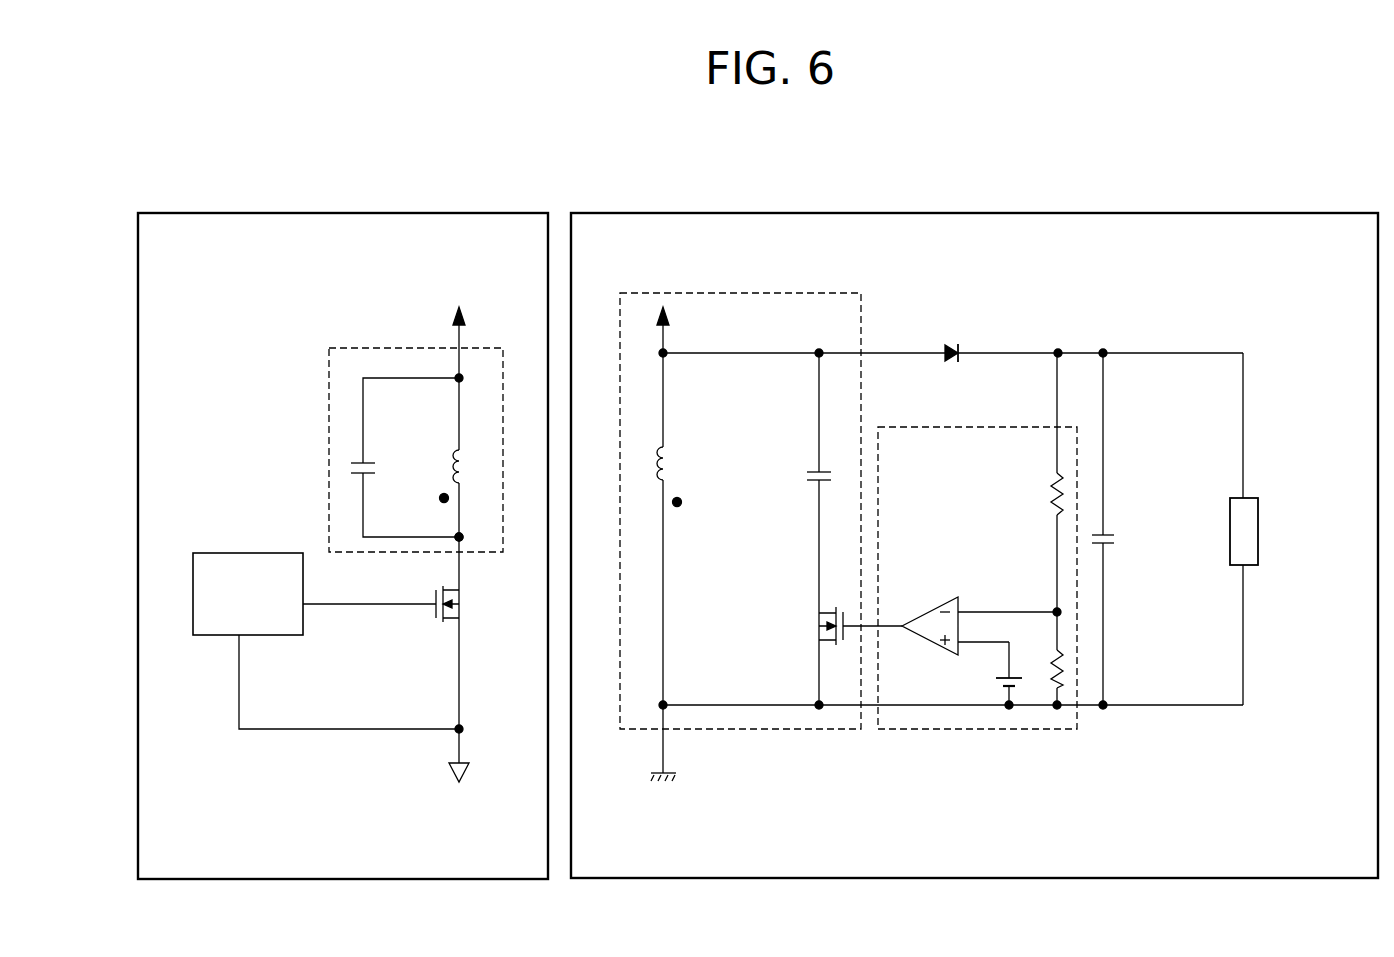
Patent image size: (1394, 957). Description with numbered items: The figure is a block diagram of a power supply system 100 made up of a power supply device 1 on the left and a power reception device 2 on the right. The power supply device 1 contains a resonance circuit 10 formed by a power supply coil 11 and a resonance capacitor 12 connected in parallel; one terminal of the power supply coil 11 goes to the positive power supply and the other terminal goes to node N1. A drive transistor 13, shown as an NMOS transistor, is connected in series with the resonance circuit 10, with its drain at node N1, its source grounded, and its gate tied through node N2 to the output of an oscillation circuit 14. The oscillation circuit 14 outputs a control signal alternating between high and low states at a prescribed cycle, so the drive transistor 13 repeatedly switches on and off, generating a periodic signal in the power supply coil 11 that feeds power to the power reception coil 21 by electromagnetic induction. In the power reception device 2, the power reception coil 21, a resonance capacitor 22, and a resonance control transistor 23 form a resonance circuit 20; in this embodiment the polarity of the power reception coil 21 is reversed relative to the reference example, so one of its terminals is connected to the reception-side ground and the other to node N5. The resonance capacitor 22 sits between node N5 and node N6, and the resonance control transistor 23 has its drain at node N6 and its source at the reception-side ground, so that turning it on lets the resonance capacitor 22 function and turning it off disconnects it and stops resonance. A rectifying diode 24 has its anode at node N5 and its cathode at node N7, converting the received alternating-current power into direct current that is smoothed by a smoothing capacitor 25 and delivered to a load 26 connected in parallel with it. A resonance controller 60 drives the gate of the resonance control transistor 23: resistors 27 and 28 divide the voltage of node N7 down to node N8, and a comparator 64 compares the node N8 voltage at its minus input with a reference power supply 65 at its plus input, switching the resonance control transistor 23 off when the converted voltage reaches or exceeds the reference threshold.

The power supply system 100 is at (200, 182).
The power supply device 1 is at (428, 211).
The power reception device 2 is at (1197, 211).
The resonance circuit 10 is at (329, 388).
The power supply coil 11 is at (468, 466).
The resonance capacitor 12 is at (355, 472).
The drive transistor 13 is at (463, 604).
The oscillation circuit 14 is at (208, 553).
The node N1 is at (465, 543).
The node N2 is at (380, 603).
The resonance circuit 20 is at (861, 318).
The power reception coil 21 is at (672, 470).
The resonance capacitor 22 is at (806, 474).
The resonance control transistor 23 is at (812, 628).
The rectifying diode 24 is at (957, 364).
The smoothing capacitor 25 is at (1117, 540).
The load 26 is at (1259, 548).
The resistor 27 is at (1047, 494).
The resistor 28 is at (1070, 675).
The resonance controller 60 is at (913, 427).
The comparator 64 is at (933, 607).
The reference power supply 65 is at (987, 683).
The node N5 is at (815, 357).
The node N6 is at (817, 548).
The node N7 is at (1107, 358).
The node N8 is at (1052, 607).